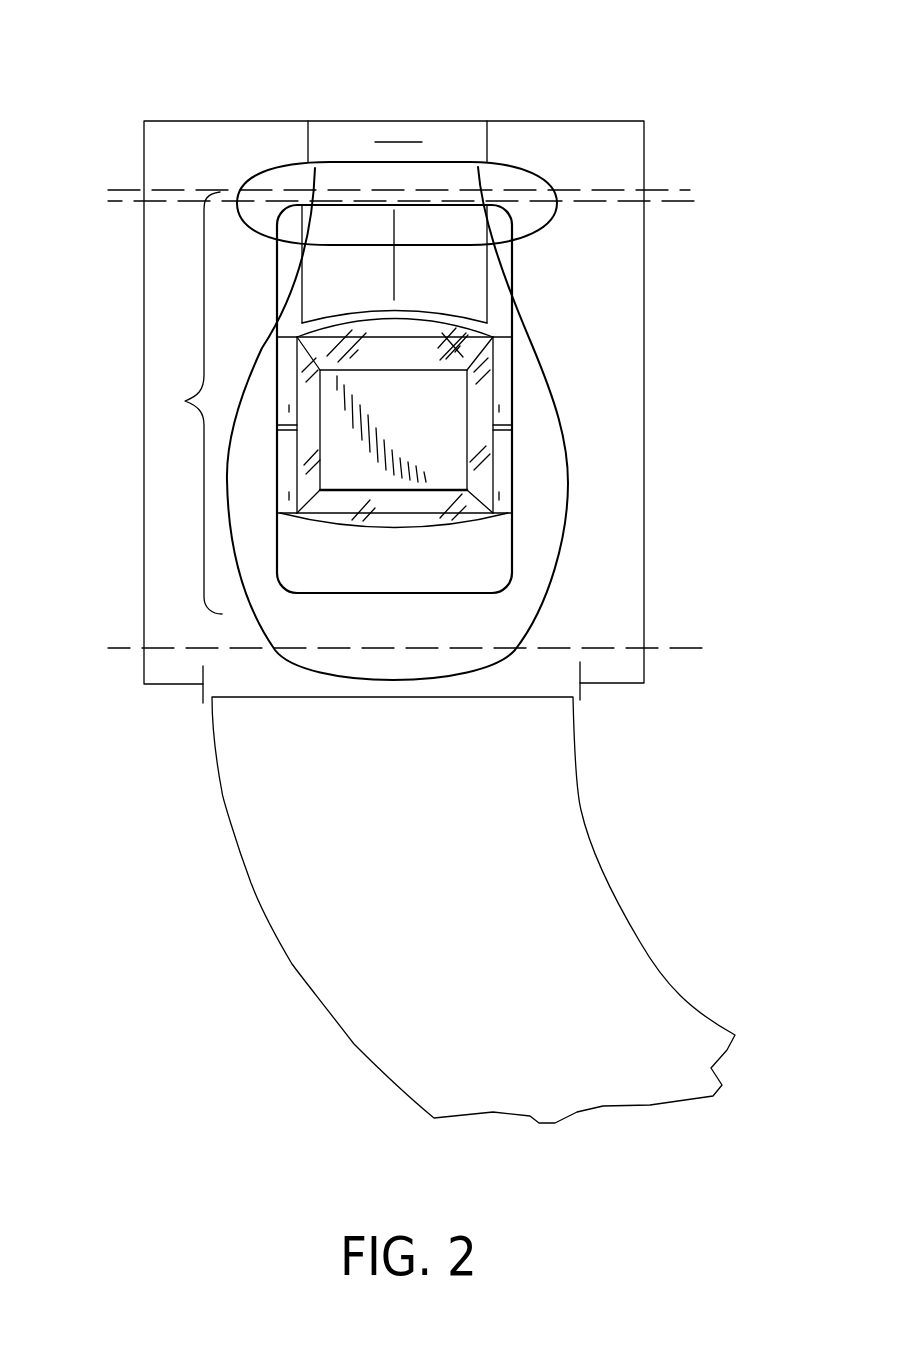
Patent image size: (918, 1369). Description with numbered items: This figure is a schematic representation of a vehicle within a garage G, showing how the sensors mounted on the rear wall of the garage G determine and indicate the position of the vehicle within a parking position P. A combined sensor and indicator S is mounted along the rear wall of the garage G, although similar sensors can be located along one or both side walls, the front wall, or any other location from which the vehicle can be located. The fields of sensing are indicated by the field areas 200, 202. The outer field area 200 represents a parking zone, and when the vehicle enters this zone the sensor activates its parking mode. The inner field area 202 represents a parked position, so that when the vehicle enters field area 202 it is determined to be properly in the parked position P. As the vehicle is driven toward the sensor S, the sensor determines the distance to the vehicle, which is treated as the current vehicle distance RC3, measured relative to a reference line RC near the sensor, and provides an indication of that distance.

The garage G is at (652, 375).
The combined sensor and indicator S is at (398, 142).
The field area 202 is at (523, 165).
The reference line RC is at (660, 188).
The current vehicle distance RC3 is at (657, 201).
The parking position P is at (185, 401).
The field area 200 is at (567, 550).